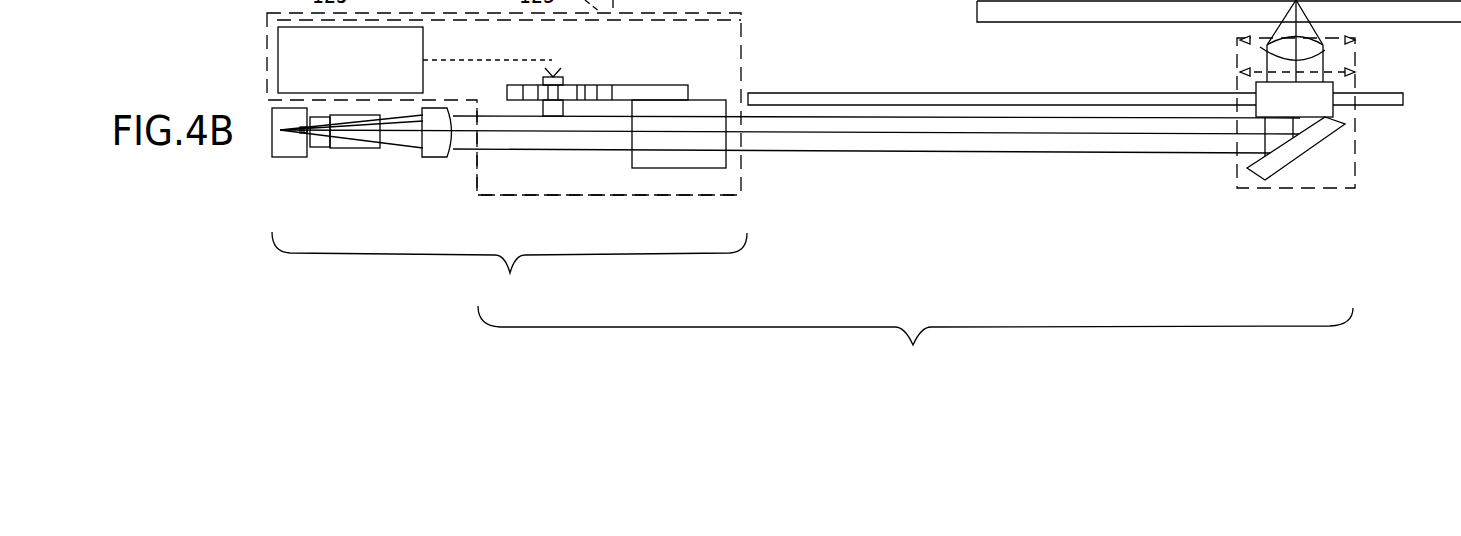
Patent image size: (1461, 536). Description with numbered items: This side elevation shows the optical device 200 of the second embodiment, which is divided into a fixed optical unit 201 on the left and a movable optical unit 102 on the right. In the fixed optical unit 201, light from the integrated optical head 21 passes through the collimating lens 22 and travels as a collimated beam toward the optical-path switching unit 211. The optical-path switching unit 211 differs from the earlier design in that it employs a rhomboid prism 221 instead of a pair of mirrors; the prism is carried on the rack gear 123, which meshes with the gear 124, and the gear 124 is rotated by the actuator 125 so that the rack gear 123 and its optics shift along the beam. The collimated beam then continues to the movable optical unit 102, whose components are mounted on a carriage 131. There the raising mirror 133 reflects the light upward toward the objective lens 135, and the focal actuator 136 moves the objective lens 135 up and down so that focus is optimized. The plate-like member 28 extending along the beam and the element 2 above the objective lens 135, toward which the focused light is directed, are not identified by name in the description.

The recording medium / photosensitive member 2 is at (977, 10).
The integrated optical head 21 is at (326, 150).
The collimating lens 22 is at (430, 157).
The plate member 28 is at (1082, 93).
The movable optical unit 102 is at (1310, 202).
The rack gear 123 is at (617, 87).
The gear 124 is at (507, 87).
The actuator 125 is at (423, 42).
The carriage 131 is at (1357, 127).
The raising mirror 133 is at (1323, 137).
The objective lens 135 is at (1260, 47).
The focal actuator 136 is at (1370, 62).
The optical device 200 is at (915, 342).
The fixed optical unit 201 is at (509, 268).
The optical-path switching unit 211 is at (550, 196).
The rhomboid prism 221 is at (726, 170).